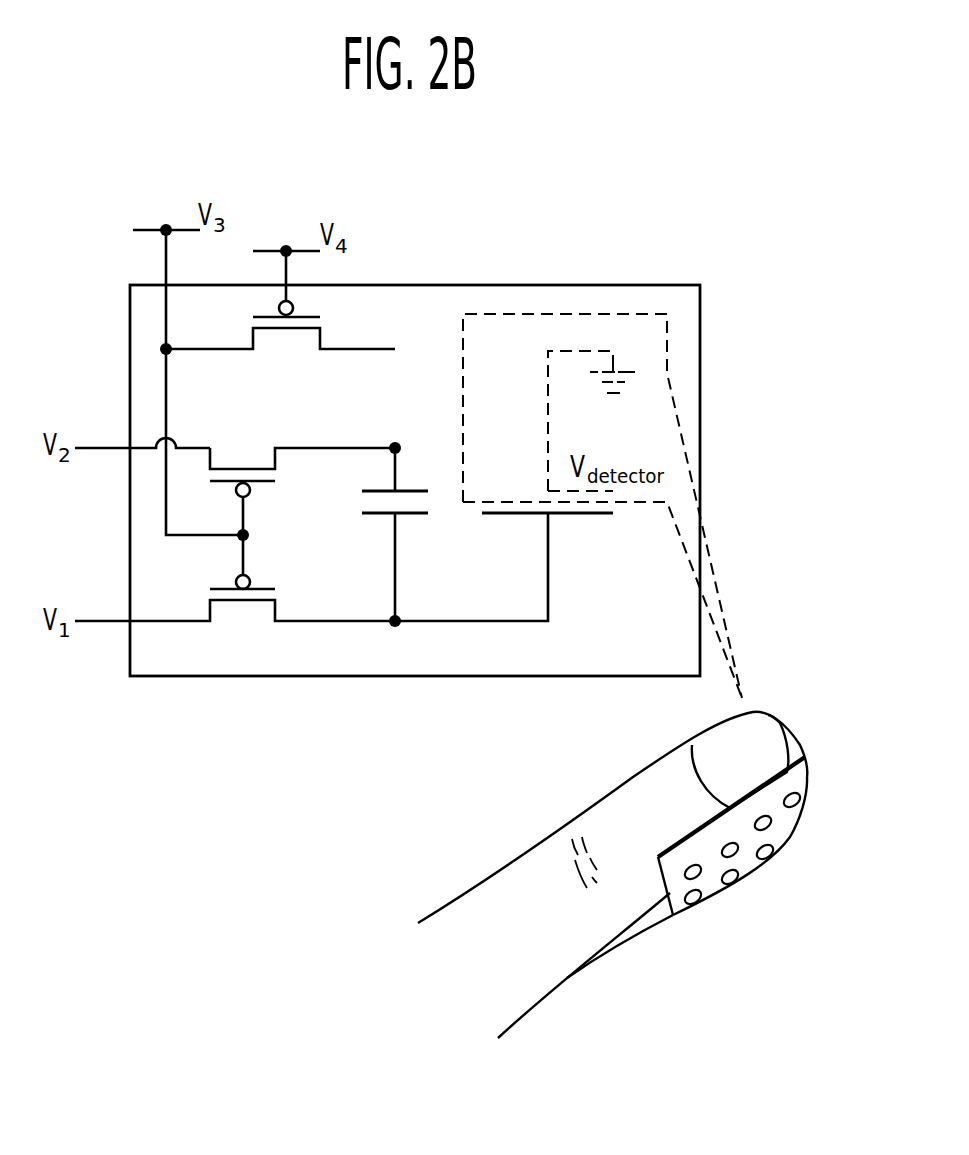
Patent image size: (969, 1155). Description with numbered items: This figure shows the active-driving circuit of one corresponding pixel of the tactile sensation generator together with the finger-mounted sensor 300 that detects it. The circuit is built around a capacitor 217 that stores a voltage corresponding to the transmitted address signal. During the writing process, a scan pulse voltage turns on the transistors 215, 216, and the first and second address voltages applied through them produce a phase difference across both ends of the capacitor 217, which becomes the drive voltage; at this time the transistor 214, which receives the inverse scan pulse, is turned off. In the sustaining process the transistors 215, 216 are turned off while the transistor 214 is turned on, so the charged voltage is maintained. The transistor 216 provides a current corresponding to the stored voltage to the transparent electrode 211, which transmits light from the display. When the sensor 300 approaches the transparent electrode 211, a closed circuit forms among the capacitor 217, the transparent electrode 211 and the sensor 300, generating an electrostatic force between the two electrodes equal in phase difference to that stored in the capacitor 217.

The sensor 300 is at (578, 296).
The transistor 214 is at (280, 343).
The transistor 215 is at (302, 499).
The transistor 216 is at (235, 616).
The capacitor 217 is at (363, 500).
The transparent electrode 211 is at (492, 516).